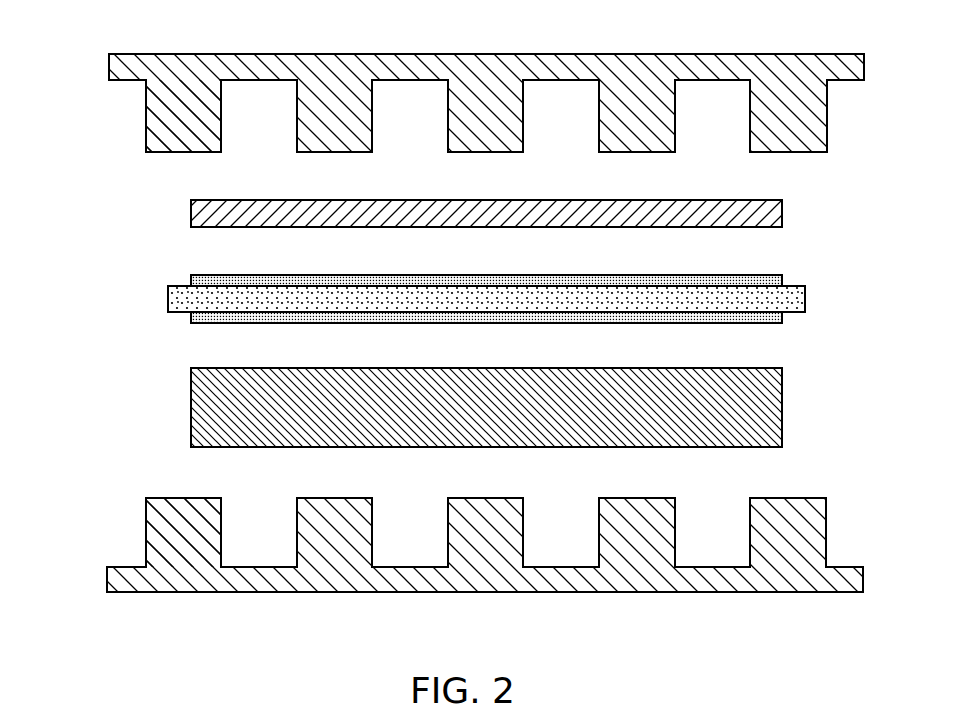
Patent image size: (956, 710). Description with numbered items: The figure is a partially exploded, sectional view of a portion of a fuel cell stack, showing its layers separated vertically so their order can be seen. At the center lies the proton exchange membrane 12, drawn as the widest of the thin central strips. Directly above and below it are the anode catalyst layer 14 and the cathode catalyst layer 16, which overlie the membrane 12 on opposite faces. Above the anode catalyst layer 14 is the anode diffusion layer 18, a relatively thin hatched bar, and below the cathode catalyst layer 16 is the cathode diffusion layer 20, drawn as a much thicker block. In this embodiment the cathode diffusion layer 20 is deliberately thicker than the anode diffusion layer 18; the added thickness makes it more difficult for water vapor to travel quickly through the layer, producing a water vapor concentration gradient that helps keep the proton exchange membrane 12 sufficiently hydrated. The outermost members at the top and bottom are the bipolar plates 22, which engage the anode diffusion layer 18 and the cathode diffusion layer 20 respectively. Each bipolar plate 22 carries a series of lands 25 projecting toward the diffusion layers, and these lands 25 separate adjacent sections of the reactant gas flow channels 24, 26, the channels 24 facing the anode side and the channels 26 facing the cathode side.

The proton exchange membrane 12 is at (168, 297).
The anode catalyst layer 14 is at (191, 281).
The cathode catalyst layer 16 is at (191, 318).
The anode diffusion layer 18 is at (191, 212).
The cathode diffusion layer 20 is at (191, 405).
The bipolar plates 22 is at (109, 64).
The reactant gas flow channels 24 is at (273, 131).
The lands 25 is at (146, 115).
The reactant gas flow channels 26 is at (273, 542).